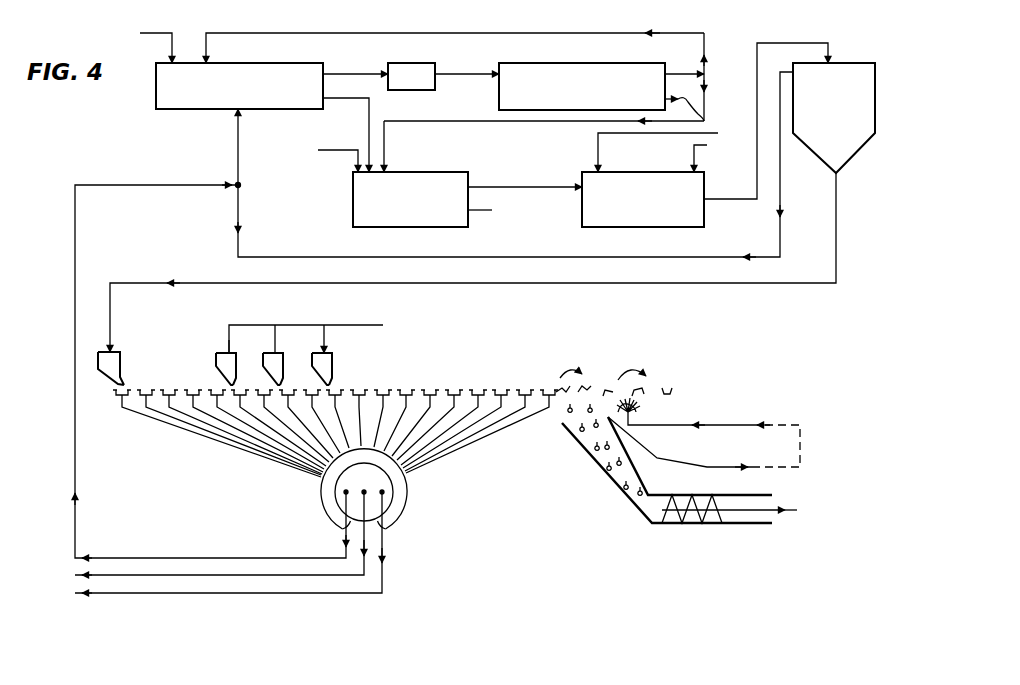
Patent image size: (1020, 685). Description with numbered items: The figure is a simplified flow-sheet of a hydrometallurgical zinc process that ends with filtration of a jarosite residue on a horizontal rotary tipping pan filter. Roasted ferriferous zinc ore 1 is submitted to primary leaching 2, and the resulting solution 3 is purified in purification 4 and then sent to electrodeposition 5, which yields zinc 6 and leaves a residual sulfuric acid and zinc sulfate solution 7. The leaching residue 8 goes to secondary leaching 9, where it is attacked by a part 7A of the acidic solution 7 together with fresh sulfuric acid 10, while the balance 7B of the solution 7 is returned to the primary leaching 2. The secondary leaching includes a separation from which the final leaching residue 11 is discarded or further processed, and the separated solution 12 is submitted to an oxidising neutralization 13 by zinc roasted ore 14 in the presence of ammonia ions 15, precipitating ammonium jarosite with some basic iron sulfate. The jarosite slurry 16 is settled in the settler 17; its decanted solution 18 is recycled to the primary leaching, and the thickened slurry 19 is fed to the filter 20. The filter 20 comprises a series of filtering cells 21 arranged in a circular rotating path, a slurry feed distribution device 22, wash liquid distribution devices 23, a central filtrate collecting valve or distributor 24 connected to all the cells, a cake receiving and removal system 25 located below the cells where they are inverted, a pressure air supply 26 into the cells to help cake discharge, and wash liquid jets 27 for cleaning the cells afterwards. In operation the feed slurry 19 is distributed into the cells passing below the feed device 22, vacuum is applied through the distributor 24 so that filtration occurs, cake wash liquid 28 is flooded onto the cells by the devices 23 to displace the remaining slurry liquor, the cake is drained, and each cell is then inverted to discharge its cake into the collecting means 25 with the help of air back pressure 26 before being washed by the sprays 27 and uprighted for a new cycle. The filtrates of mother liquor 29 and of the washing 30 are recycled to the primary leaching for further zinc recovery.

The roasted ferriferous zinc ore 1 is at (160, 33).
The primary leaching 2 is at (288, 95).
The solution 3 is at (340, 73).
The purification 4 is at (416, 85).
The electrodeposition 5 is at (614, 63).
The zinc 6 is at (551, 106).
The residual sulfuric acid and zinc sulfate solution 7 is at (694, 72).
The part of the acidic solution 7A is at (390, 151).
The balance of solution 7B is at (241, 32).
The leaching residue 8 is at (355, 102).
The secondary leaching 9 is at (432, 172).
The fresh sulfuric acid 10 is at (323, 150).
The final leaching residue 11 is at (492, 210).
The solution 12 is at (526, 187).
The oxidising neutralization 13 is at (582, 214).
The zinc roasted ore 14 is at (712, 145).
The ammonia ions 15 is at (722, 128).
The jarosite slurry 16 is at (800, 42).
The settler 17 is at (848, 135).
The decanted solution 18 is at (782, 218).
The thickened slurry 19 is at (836, 236).
The filter 20 is at (434, 386).
The filtering cells 21 is at (196, 389).
The slurry feed distribution device 22 is at (121, 364).
The wash liquid distribution devices 23 is at (313, 362).
The filtrate collecting valve or distributor 24 is at (388, 507).
The cake receiving and removal system 25 is at (653, 523).
The pressure air supply 26 is at (580, 392).
The wash liquid jets 27 is at (741, 421).
The cake wash liquid 28 is at (393, 341).
The filtrate of mother liquor 29 is at (246, 558).
The filtrate of the washing 30 is at (382, 570).